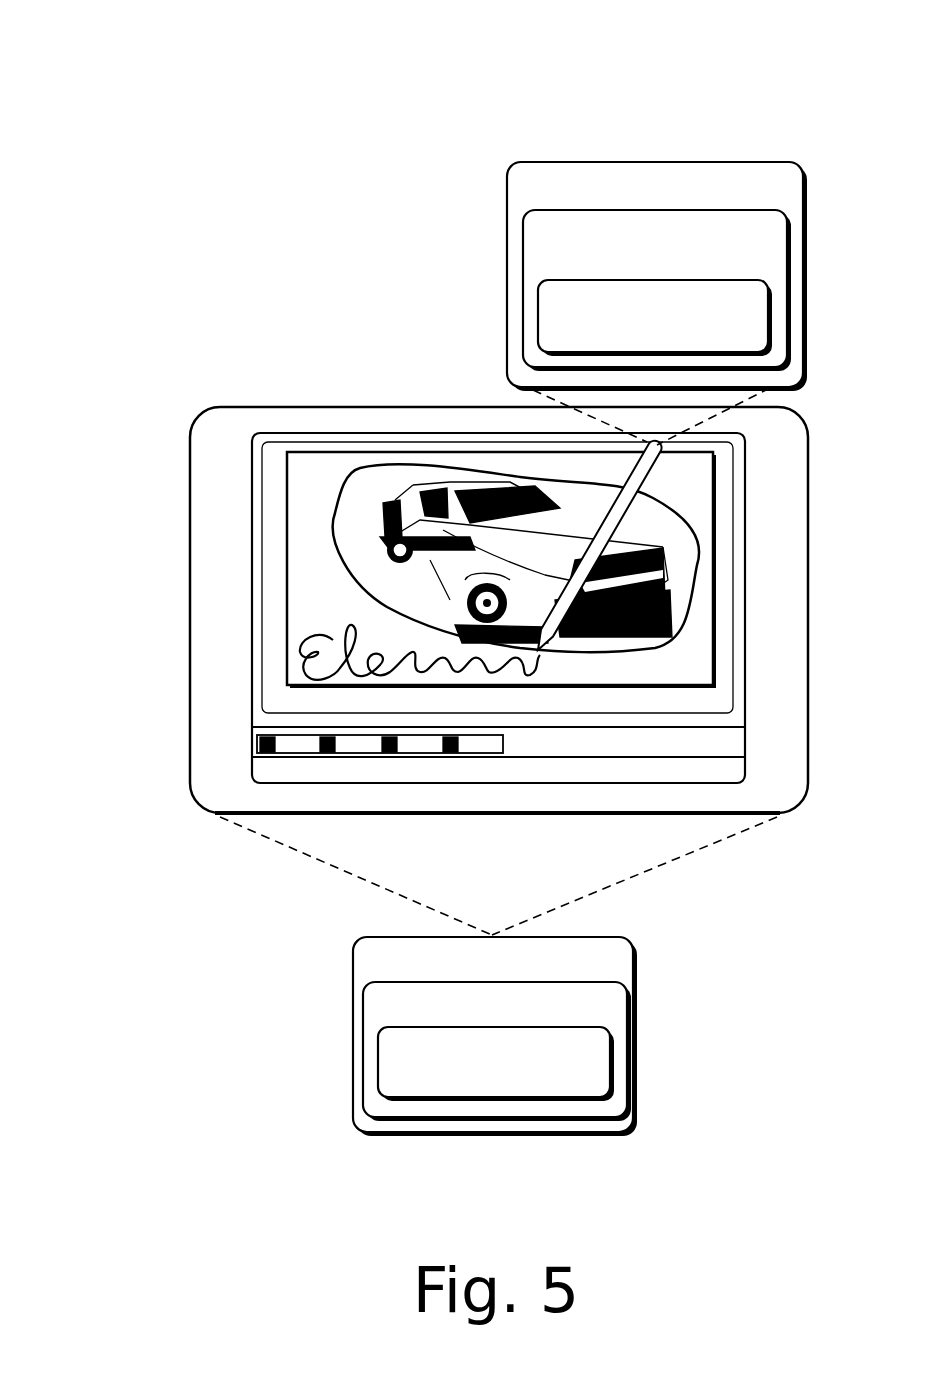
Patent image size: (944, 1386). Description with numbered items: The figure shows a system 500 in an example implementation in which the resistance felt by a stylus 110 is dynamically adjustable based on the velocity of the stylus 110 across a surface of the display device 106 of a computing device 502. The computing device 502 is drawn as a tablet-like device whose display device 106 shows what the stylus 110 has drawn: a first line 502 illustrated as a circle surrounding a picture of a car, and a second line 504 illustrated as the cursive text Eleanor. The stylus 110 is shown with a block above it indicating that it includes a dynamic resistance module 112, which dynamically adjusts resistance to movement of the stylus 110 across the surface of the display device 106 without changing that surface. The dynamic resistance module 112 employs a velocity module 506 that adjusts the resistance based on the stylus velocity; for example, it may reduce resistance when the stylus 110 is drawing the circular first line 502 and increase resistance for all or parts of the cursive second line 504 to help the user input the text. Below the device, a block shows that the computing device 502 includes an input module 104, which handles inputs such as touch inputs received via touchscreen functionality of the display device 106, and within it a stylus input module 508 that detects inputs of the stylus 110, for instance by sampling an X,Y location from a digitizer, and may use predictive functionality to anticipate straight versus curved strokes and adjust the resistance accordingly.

The system 500 is at (166, 84).
The computing device 502 is at (499, 758).
The display device 106 is at (317, 443).
The stylus 110 is at (657, 406).
The dynamic resistance module 112 is at (657, 290).
The velocity module 506 is at (655, 318).
The second line 504 is at (538, 658).
The input module 104 is at (497, 1051).
The stylus input module 508 is at (496, 1064).